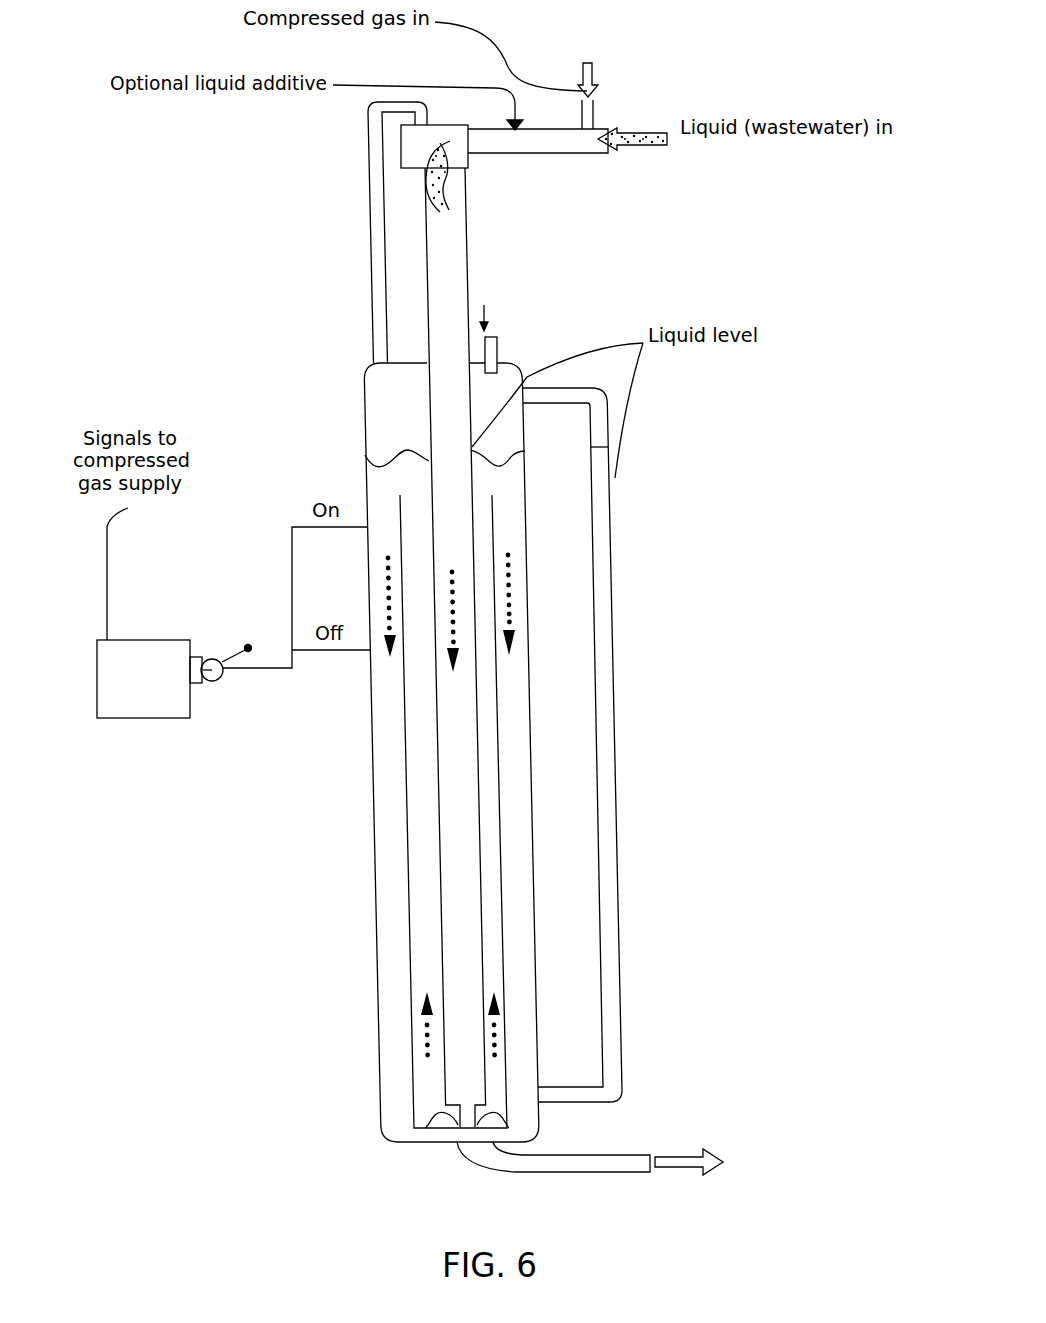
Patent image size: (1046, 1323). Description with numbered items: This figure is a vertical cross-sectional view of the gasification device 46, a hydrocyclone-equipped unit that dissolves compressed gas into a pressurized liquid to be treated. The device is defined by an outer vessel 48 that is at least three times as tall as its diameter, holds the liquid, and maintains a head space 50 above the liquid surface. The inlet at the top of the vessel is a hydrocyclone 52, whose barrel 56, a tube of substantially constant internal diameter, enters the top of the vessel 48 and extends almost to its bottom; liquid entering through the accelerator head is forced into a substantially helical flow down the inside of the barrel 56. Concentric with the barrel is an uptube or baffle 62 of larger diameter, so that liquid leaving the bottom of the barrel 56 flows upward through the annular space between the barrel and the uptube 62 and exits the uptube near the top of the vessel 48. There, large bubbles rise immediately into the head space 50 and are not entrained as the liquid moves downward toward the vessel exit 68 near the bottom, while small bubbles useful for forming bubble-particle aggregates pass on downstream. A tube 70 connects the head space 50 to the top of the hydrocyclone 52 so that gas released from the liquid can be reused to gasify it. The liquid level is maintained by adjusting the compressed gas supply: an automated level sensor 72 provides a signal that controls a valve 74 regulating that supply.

The gasification device 46 is at (656, 571).
The outer vessel 48 is at (375, 845).
The head space 50 is at (428, 461).
The hydrocyclone 52 is at (478, 166).
The barrel 56 is at (468, 262).
The uptube or baffle 62 is at (405, 745).
The vessel exit 68 is at (572, 1173).
The tube 70 is at (367, 183).
The automated level sensor 72 is at (97, 697).
The valve 74 is at (498, 343).